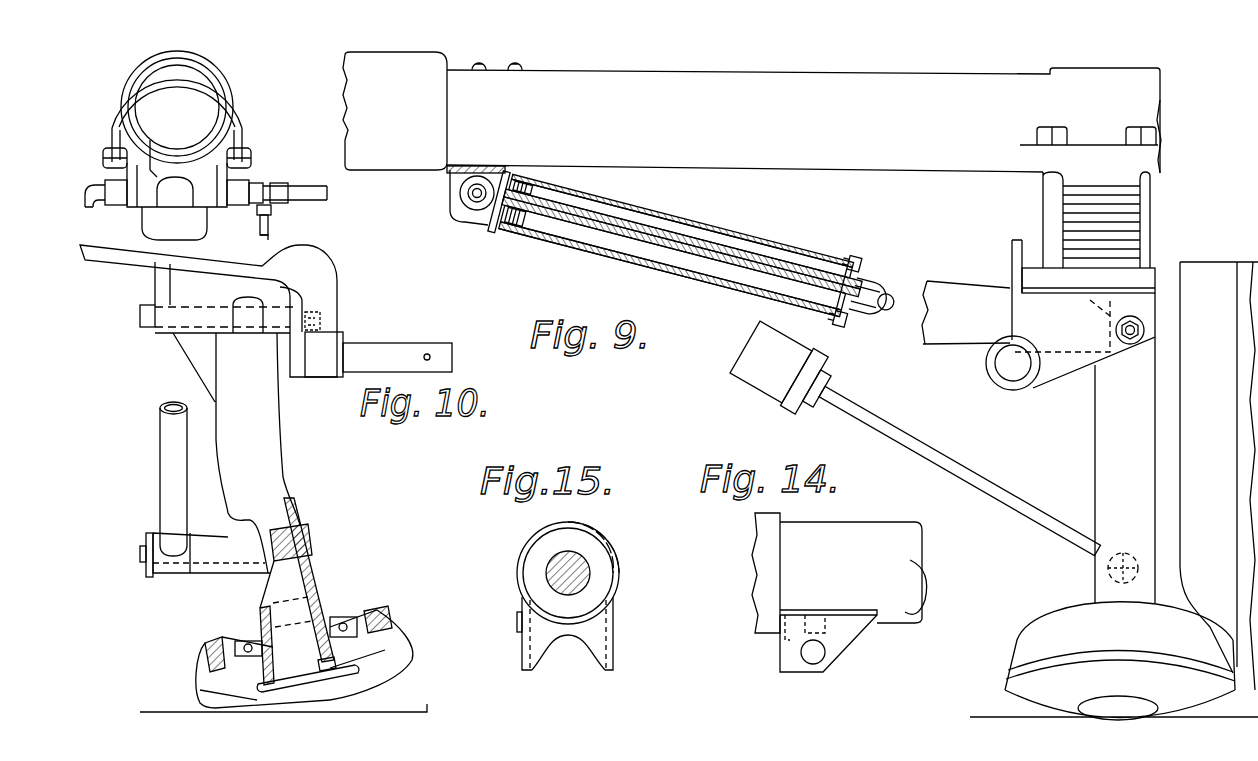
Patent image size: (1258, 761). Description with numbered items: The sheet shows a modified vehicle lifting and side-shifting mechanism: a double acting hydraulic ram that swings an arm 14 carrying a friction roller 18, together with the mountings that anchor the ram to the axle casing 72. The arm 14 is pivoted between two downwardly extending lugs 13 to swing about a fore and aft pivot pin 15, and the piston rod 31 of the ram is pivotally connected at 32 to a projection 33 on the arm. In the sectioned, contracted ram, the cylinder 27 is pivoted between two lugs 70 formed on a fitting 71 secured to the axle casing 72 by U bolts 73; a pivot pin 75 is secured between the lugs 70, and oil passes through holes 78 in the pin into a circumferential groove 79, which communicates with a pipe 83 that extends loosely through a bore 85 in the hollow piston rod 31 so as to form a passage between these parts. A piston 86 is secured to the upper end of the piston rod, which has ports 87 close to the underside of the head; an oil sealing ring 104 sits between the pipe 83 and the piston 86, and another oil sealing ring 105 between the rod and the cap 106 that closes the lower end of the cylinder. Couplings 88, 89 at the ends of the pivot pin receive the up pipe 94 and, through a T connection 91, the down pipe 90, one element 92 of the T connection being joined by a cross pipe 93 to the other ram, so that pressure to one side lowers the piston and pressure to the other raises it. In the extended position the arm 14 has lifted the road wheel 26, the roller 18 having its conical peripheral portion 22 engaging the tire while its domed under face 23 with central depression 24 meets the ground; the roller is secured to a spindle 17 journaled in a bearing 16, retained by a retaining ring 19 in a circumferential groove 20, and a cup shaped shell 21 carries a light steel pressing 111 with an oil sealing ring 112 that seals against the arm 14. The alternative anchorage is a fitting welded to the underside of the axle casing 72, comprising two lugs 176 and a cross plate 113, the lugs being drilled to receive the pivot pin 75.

In FIG. 10, the downwardly extending lugs 13 is at (297, 377).
In FIG. 9, the downwardly extending lugs 13 is at (1053, 373).
In FIG. 10, the arm 14 is at (260, 618).
In FIG. 9, the arm 14 is at (943, 281).
In FIG. 10, the pivot pin 15 is at (318, 311).
In FIG. 9, the pivot pin 15 is at (1115, 328).
In FIG. 10, the bearing 16 is at (315, 579).
In FIG. 10, the spindle 17 is at (273, 591).
In FIG. 9, the wheel 18 is at (1005, 647).
In FIG. 10, the retaining ring 19 is at (312, 554).
In FIG. 10, the circumferential groove 20 is at (262, 545).
In FIG. 10, the cup shaped shell 21 is at (208, 648).
In FIG. 10, the peripheral portion 22 is at (203, 678).
In FIG. 9, the peripheral portion 22 is at (1009, 668).
In FIG. 10, the under face 23 is at (398, 668).
In FIG. 9, the under face 23 is at (1037, 694).
In FIG. 10, the central depression 24 is at (347, 698).
In FIG. 9, the central depression 24 is at (1110, 700).
In FIG. 9, the road wheel 26 is at (1220, 270).
In FIG. 10, the cylinder 27 is at (207, 225).
In FIG. 9, the cylinder 27 is at (603, 260).
In FIG. 10, the piston rod 31 is at (160, 451).
In FIG. 9, the piston rod 31 is at (773, 267).
In FIG. 10, the pivotal connection 32 is at (141, 548).
In FIG. 9, the pivotal connection 32 is at (1121, 555).
In FIG. 10, the projection 33 is at (203, 536).
In FIG. 9, the lugs 70 is at (451, 211).
In FIG. 10, the fitting 71 is at (200, 178).
In FIG. 9, the fitting 71 is at (500, 171).
In FIG. 10, the axle casing 72 is at (217, 85).
In FIG. 9, the axle casing 72 is at (847, 171).
In FIG. 15, the axle casing 72 is at (618, 551).
In FIG. 14, the axle casing 72 is at (843, 523).
In FIG. 10, the U bolts 73 is at (246, 106).
In FIG. 9, the U bolts 73 is at (513, 70).
In FIG. 9, the pivot pin 75 is at (468, 193).
In FIG. 9, the holes 78 is at (470, 209).
In FIG. 9, the circumferential groove 79 is at (478, 217).
In FIG. 9, the pipe 83 is at (680, 253).
In FIG. 9, the bore 85 is at (725, 256).
In FIG. 9, the piston 86 is at (527, 188).
In FIG. 9, the ports 87 is at (535, 223).
In FIG. 10, the coupling 88 is at (117, 198).
In FIG. 10, the coupling 89 is at (245, 186).
In FIG. 10, the down pipe 90 is at (308, 187).
In FIG. 10, the T connection 91 is at (270, 180).
In FIG. 10, the element of T connection 92 is at (271, 204).
In FIG. 10, the cross pipe 93 is at (275, 229).
In FIG. 10, the up pipe 94 is at (145, 148).
In FIG. 9, the oil sealing ring 104 is at (503, 229).
In FIG. 9, the oil sealing ring 105 is at (863, 280).
In FIG. 9, the cap 106 is at (845, 331).
In FIG. 10, the light steel pressing 111 is at (378, 612).
In FIG. 10, the oil sealing ring 112 is at (340, 620).
In FIG. 15, the cross plate 113 is at (586, 639).
In FIG. 15, the lugs 176 is at (611, 637).
In FIG. 14, the lugs 176 is at (835, 659).